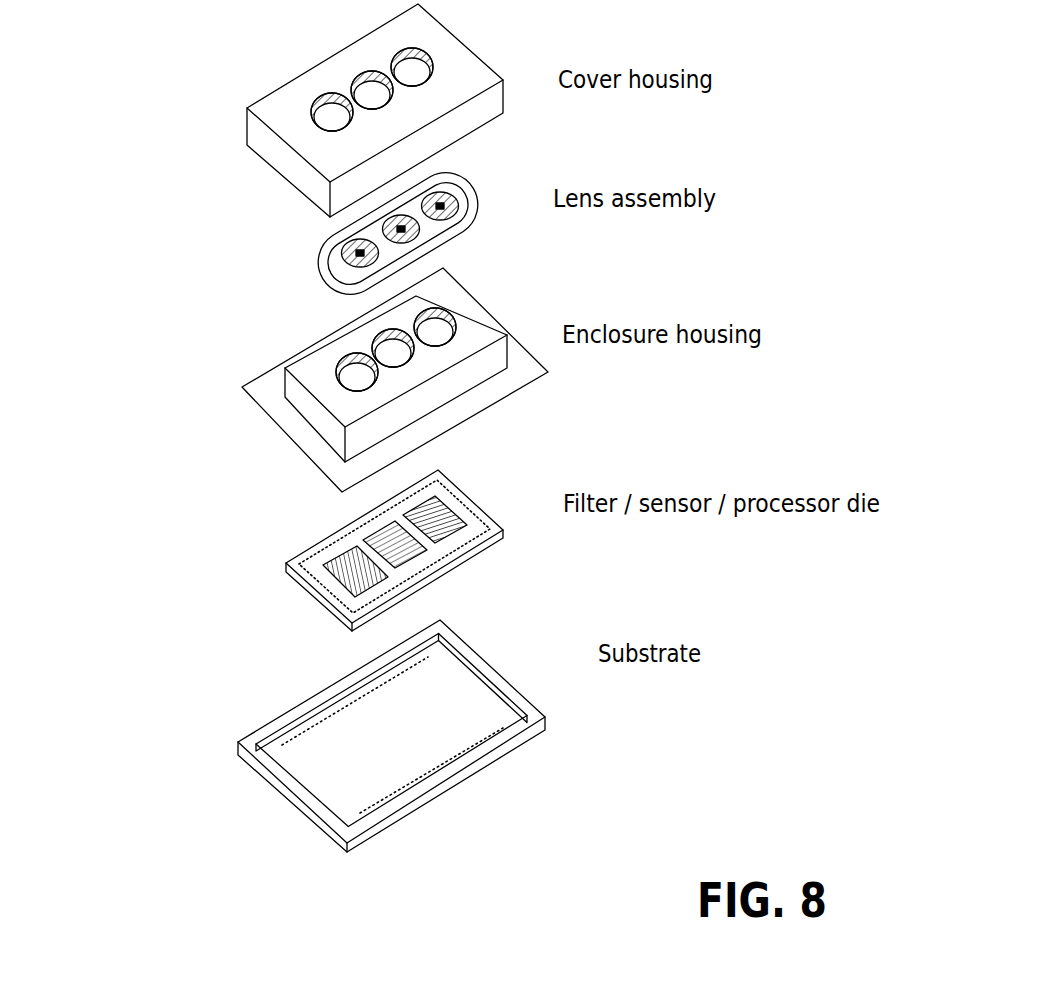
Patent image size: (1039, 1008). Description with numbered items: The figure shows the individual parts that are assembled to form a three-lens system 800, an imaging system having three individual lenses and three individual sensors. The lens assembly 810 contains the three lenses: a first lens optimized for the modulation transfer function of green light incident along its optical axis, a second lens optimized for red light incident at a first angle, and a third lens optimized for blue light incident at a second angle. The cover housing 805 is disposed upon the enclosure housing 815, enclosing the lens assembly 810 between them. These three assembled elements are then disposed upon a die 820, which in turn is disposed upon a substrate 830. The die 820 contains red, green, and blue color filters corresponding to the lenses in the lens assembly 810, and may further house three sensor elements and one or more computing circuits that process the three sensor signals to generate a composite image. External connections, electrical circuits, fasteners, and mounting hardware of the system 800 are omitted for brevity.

The three-lens system 800 is at (916, 90).
The cover housing 805 is at (278, 90).
The lens assembly 810 is at (323, 243).
The enclosure housing 815 is at (272, 367).
The die 820 is at (320, 538).
The substrate 830 is at (287, 710).